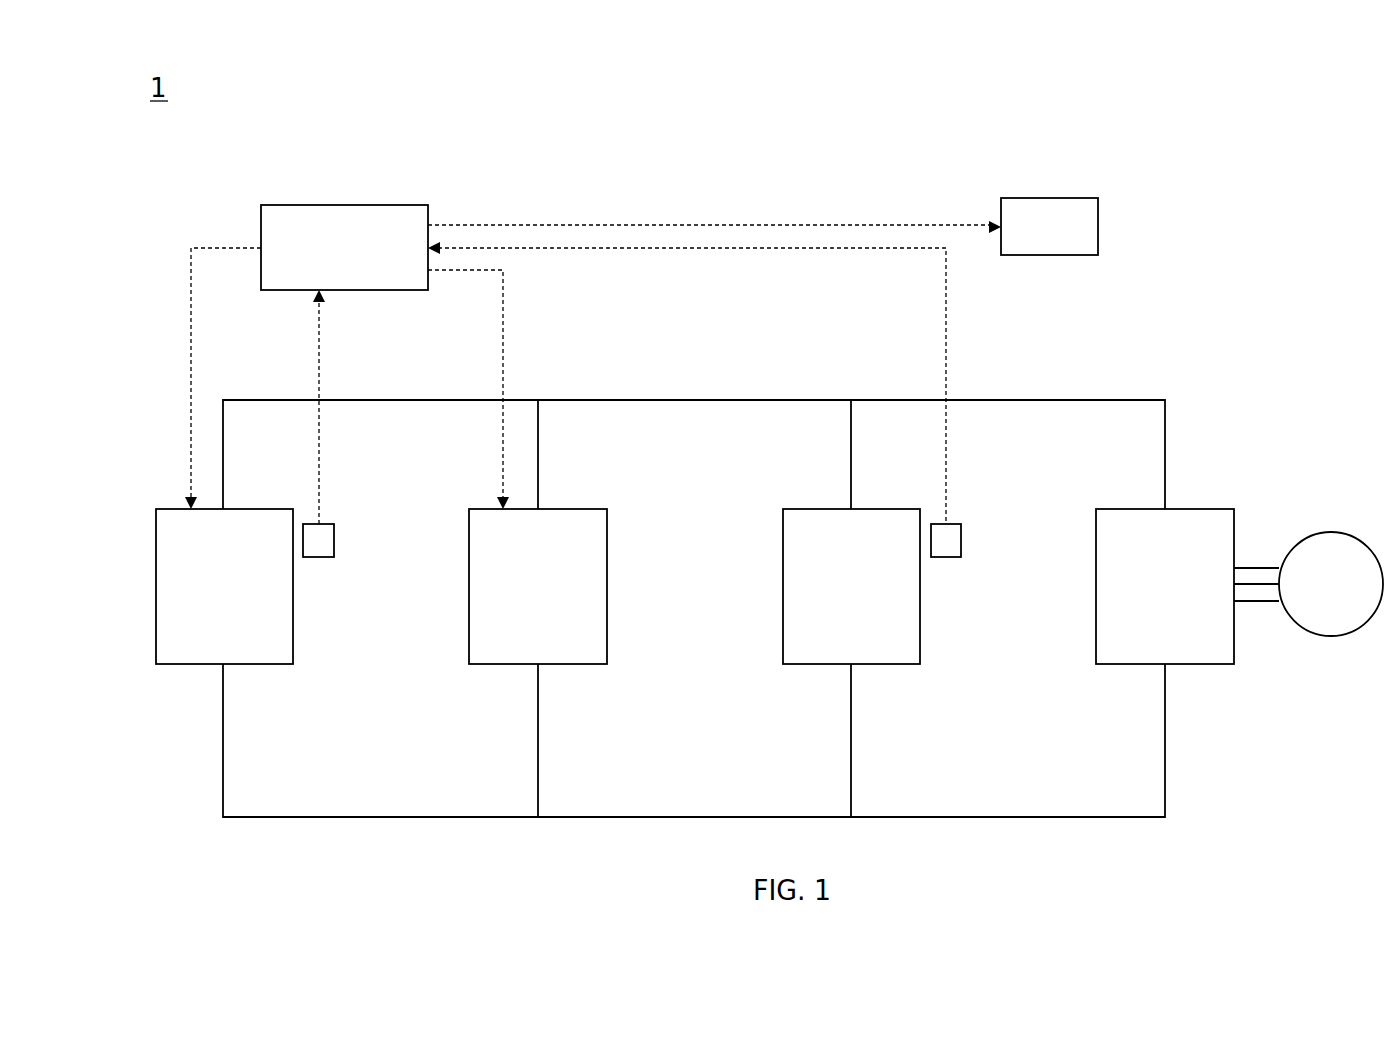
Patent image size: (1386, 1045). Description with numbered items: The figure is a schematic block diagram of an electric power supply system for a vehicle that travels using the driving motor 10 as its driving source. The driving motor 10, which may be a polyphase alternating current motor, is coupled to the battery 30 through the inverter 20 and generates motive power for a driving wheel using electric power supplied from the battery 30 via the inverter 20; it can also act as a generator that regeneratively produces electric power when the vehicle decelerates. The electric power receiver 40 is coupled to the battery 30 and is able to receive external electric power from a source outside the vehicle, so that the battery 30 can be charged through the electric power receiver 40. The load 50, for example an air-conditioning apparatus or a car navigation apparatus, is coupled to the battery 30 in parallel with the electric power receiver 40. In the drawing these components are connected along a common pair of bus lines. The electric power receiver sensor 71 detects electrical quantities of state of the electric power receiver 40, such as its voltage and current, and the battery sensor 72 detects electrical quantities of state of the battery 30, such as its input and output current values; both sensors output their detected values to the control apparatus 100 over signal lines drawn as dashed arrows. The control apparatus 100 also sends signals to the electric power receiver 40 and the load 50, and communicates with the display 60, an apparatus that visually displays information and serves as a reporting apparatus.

The driving motor 10 is at (1331, 637).
The inverter 20 is at (1217, 664).
The battery 30 is at (903, 664).
The electric power receiver 40 is at (283, 664).
The load 50 is at (590, 664).
The display 60 is at (1065, 195).
The electric power receiver sensor 71 is at (320, 557).
The battery sensor 72 is at (948, 557).
The control apparatus 100 is at (372, 200).